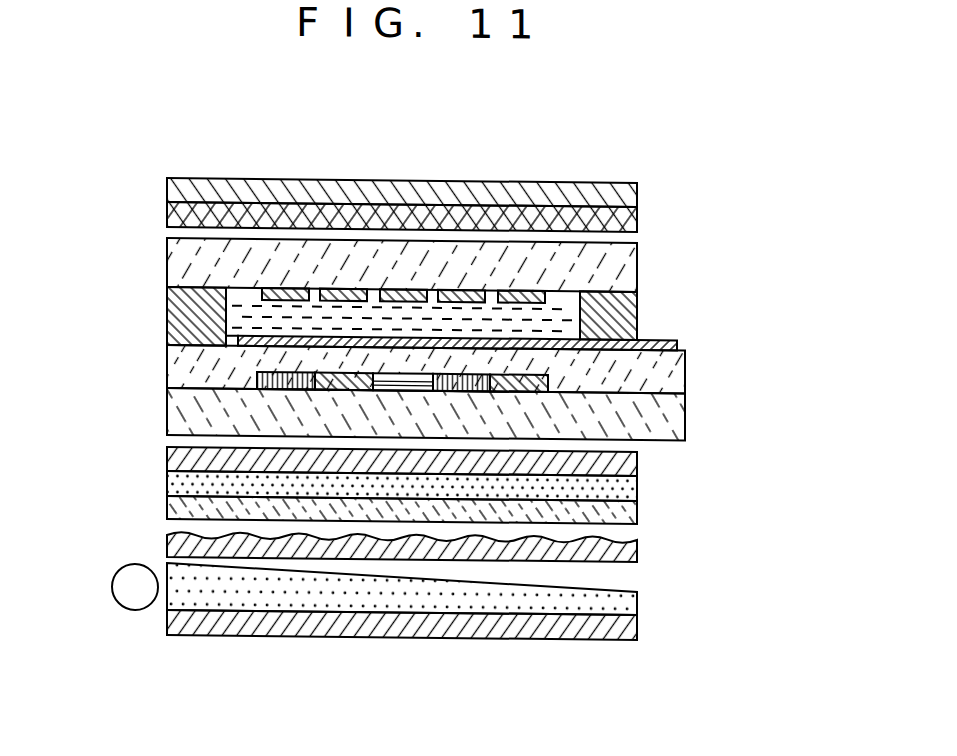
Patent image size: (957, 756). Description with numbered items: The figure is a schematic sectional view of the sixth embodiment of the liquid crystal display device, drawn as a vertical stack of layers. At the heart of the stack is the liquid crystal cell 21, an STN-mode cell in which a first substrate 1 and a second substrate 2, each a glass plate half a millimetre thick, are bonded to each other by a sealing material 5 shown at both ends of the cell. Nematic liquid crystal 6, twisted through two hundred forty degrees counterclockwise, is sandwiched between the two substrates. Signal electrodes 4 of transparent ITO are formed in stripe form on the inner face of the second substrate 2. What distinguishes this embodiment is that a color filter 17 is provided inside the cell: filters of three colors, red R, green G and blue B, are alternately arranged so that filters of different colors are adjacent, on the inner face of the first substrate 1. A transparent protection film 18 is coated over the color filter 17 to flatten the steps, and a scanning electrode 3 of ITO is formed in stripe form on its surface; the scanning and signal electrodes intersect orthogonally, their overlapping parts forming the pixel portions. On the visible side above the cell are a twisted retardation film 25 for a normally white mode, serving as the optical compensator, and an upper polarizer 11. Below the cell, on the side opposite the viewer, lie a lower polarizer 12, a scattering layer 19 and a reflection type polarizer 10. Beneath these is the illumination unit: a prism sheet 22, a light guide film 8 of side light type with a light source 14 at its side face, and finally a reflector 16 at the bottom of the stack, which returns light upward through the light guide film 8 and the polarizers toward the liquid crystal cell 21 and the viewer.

The first substrate 1 is at (665, 410).
The second substrate 2 is at (630, 253).
The scanning electrode 3 is at (680, 342).
The signal electrodes 4 is at (341, 288).
The sealing material 5 is at (625, 307).
The nematic liquid crystal 6 is at (243, 311).
The light guide film 8 is at (620, 595).
The reflection type polarizer 10 is at (637, 508).
The upper polarizer 11 is at (640, 186).
The lower polarizer 12 is at (637, 453).
The light source 14 is at (127, 592).
The reflector 16 is at (637, 623).
The color filter 17 is at (402, 224).
The transparent protection film 18 is at (668, 367).
The scattering layer 19 is at (637, 482).
The liquid crystal cell 21 is at (417, 248).
The prism sheet 22 is at (637, 543).
The twisted retardation film 25 is at (640, 213).
The blue filter B is at (407, 378).
The red filter R is at (467, 375).
The green filter G is at (529, 369).